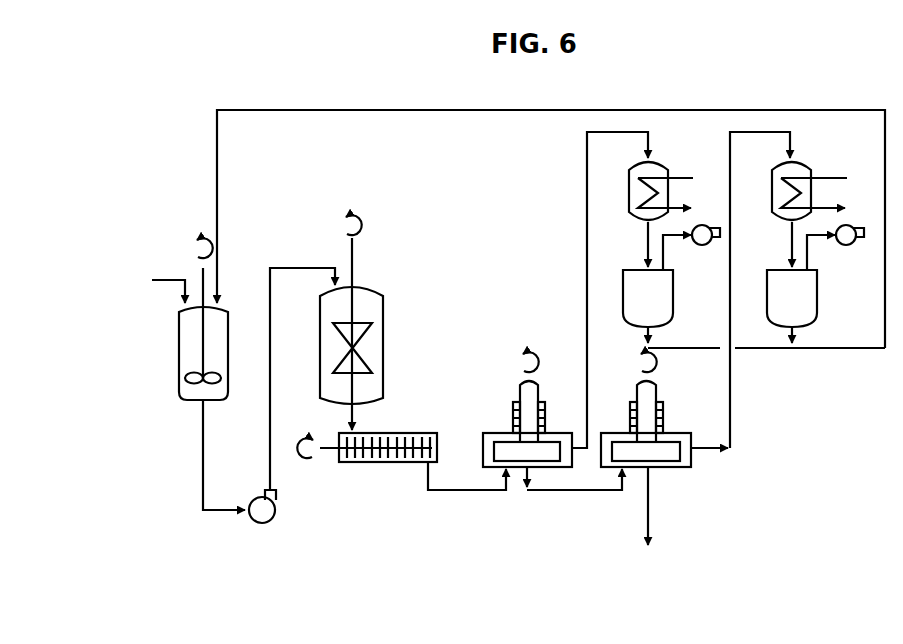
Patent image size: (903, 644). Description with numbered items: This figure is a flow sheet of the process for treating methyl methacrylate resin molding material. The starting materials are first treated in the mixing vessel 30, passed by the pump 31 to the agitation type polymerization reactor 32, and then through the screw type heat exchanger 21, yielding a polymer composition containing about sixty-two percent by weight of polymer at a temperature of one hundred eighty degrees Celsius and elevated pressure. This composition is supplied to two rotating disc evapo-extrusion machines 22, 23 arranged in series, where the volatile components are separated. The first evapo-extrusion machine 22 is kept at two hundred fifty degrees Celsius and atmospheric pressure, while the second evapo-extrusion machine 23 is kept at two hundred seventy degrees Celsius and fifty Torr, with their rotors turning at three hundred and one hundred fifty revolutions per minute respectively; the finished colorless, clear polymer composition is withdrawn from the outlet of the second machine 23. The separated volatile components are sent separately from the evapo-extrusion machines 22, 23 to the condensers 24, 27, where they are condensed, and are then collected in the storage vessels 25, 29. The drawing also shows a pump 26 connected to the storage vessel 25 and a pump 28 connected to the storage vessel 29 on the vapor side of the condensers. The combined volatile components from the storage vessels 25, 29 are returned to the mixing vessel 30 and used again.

The screw type heat exchanger 21 is at (367, 463).
The first evapo-extrusion machine 22 is at (525, 409).
The second evapo-extrusion machine 23 is at (645, 409).
The condenser 24 is at (661, 182).
The storage vessel 25 is at (664, 298).
The first vacuum pump 26 is at (706, 225).
The condenser 27 is at (809, 182).
The second vacuum pump 28 is at (855, 225).
The storage vessel 29 is at (808, 298).
The mixing vessel 30 is at (190, 255).
The pump 31 is at (259, 525).
The agitation type polymerization reactor 32 is at (367, 309).